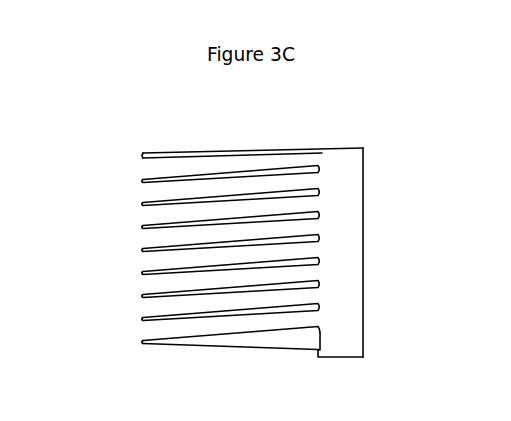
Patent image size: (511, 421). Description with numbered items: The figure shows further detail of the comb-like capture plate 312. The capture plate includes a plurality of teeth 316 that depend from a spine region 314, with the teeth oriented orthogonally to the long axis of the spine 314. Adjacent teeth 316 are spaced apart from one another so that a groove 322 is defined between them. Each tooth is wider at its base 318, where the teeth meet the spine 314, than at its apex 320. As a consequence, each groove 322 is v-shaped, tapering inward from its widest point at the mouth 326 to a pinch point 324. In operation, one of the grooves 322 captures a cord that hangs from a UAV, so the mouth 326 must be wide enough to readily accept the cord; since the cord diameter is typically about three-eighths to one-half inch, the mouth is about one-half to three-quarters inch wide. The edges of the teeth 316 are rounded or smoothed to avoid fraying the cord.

The capture plate 312 is at (246, 258).
The spine region 314 is at (342, 345).
The teeth 316 is at (247, 151).
The base 318 is at (322, 157).
The apex 320 is at (145, 153).
The groove 322 is at (146, 190).
The pinch point 324 is at (320, 215).
The mouth 326 is at (141, 218).